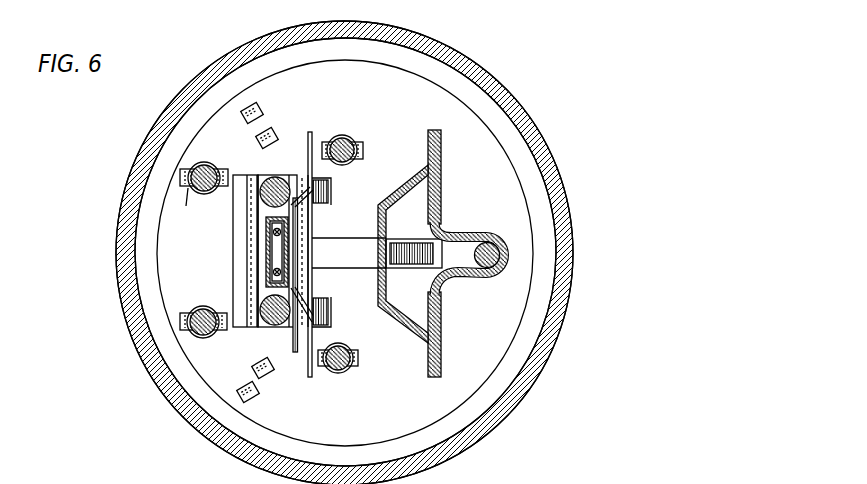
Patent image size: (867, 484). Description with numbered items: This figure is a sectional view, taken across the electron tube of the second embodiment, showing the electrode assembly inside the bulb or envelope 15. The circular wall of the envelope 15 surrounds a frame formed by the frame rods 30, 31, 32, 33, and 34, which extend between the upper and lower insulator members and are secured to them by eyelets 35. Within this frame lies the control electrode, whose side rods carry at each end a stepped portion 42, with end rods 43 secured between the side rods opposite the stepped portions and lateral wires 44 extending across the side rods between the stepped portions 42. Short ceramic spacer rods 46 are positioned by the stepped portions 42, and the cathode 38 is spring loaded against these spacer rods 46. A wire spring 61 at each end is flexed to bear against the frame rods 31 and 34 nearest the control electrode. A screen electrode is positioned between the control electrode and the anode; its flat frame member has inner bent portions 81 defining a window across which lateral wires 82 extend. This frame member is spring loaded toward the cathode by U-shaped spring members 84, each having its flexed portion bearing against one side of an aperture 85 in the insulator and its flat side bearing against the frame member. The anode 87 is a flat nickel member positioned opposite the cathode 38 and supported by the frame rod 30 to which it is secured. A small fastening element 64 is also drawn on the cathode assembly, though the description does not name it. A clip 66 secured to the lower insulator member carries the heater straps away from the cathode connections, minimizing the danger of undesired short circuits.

The bulb or envelope 15 is at (551, 135).
The frame rod 30 is at (490, 243).
The frame rod 31 is at (337, 373).
The frame rod 32 is at (204, 339).
The frame rod 33 is at (205, 166).
The frame rod 34 is at (342, 140).
The eyelets 35 is at (372, 362).
The cathode 38 is at (268, 263).
The stepped portion 42 is at (276, 184).
The end rods 43 is at (236, 290).
The lateral wires 44 is at (284, 252).
The spacer rods 46 is at (300, 174).
The wire spring 61 is at (298, 195).
The fastening screw 64 is at (274, 231).
The clip 66 is at (256, 105).
The inner bent portions 81 is at (299, 334).
The lateral wires 82 is at (300, 228).
The U-shaped spring members 84 is at (330, 195).
The aperture 85 is at (329, 181).
The anode 87 is at (386, 283).